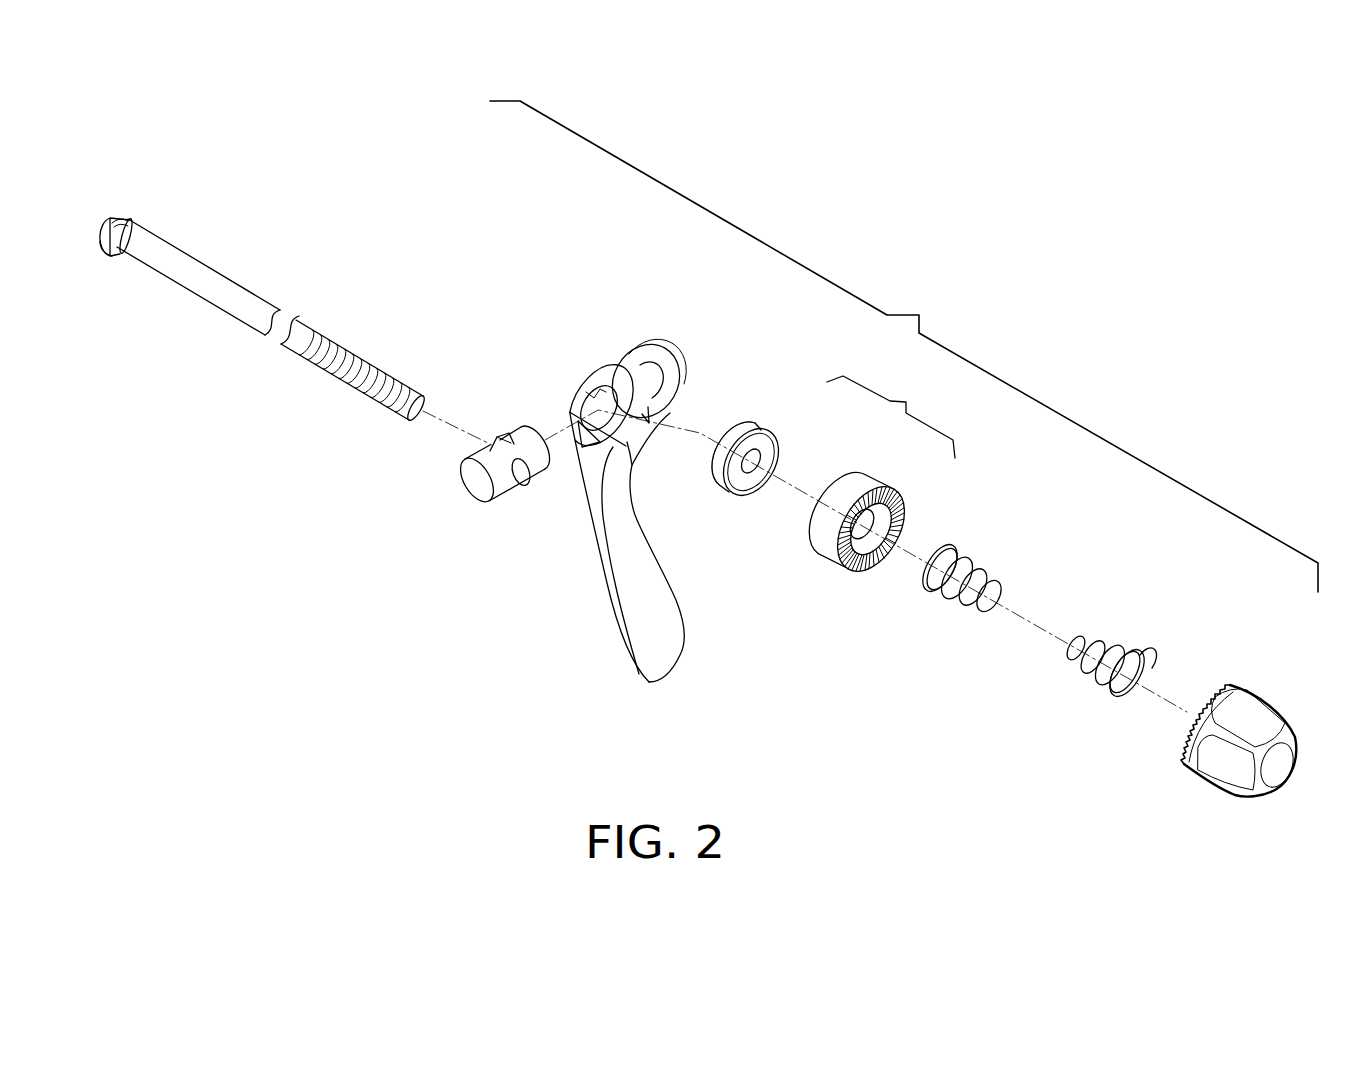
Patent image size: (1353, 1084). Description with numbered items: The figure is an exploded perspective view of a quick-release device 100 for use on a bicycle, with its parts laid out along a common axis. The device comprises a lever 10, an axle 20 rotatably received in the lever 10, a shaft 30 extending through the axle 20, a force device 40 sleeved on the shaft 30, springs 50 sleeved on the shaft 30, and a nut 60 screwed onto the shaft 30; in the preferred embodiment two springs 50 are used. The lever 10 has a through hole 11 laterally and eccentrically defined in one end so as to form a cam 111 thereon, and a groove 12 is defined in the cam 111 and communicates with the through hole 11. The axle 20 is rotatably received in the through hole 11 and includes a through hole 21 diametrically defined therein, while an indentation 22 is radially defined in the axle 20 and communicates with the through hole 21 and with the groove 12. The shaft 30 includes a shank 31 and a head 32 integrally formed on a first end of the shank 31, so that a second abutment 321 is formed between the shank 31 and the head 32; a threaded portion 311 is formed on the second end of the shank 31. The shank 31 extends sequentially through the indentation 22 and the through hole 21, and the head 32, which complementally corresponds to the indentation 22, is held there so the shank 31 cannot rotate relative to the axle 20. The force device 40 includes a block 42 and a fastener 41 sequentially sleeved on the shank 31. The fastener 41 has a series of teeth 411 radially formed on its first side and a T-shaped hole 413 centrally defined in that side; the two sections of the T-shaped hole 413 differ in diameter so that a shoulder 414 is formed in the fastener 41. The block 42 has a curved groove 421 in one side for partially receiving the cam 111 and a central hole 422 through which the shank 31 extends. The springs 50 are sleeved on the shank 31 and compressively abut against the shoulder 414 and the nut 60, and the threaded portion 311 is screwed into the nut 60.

The quick-release device 100 is at (1098, 338).
The lever 10 is at (647, 497).
The through hole 11 is at (587, 399).
The cam 111 is at (647, 424).
The groove 12 is at (654, 392).
The axle 20 is at (461, 448).
The through hole 21 is at (518, 476).
The indentation 22 is at (497, 443).
The shaft 30 is at (300, 262).
The shank 31 is at (207, 277).
The threaded portion 311 is at (347, 378).
The head 32 is at (124, 217).
The second abutment 321 is at (116, 258).
The force device 40 is at (856, 533).
The fastener 41 is at (916, 568).
The teeth 411 is at (878, 560).
The T-shaped hole 413 is at (862, 534).
The shoulder 414 is at (877, 513).
The block 42 is at (764, 504).
The curved groove 421 is at (714, 456).
The central hole 422 is at (751, 470).
The spring 50 is at (964, 560).
The nut 60 is at (1247, 710).